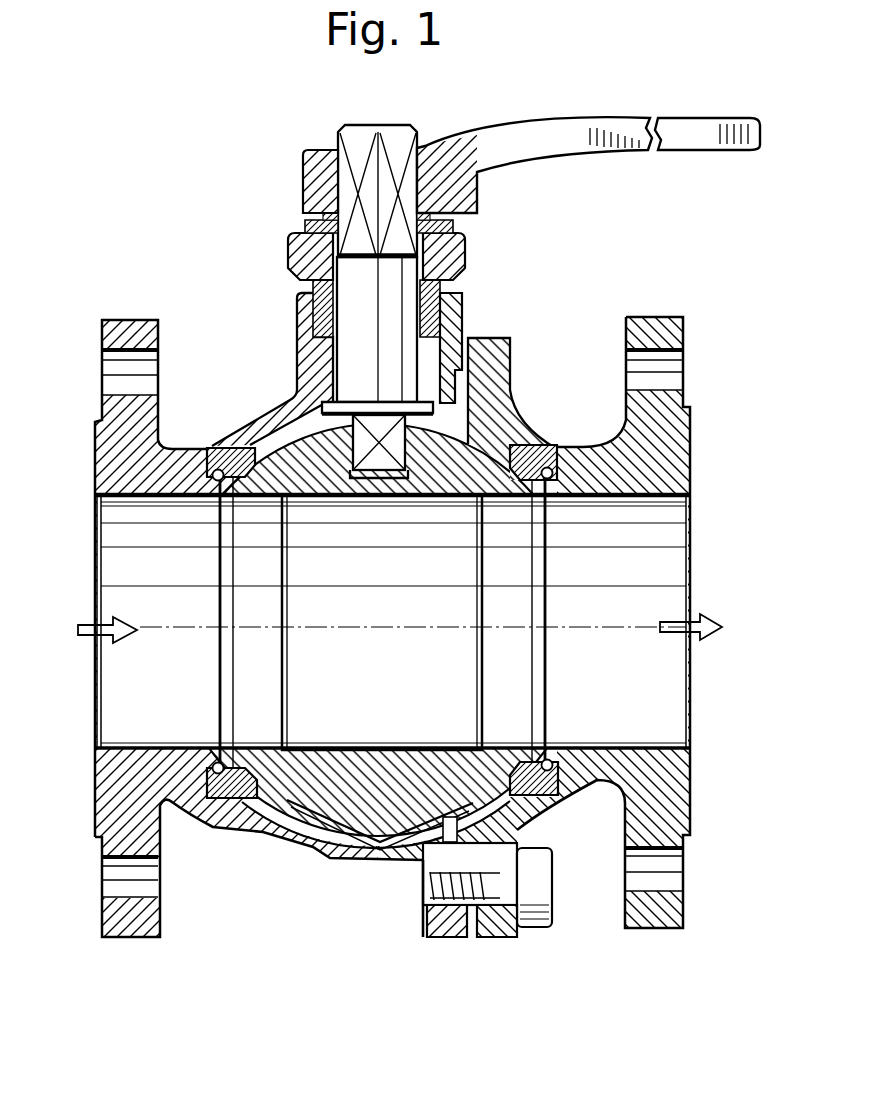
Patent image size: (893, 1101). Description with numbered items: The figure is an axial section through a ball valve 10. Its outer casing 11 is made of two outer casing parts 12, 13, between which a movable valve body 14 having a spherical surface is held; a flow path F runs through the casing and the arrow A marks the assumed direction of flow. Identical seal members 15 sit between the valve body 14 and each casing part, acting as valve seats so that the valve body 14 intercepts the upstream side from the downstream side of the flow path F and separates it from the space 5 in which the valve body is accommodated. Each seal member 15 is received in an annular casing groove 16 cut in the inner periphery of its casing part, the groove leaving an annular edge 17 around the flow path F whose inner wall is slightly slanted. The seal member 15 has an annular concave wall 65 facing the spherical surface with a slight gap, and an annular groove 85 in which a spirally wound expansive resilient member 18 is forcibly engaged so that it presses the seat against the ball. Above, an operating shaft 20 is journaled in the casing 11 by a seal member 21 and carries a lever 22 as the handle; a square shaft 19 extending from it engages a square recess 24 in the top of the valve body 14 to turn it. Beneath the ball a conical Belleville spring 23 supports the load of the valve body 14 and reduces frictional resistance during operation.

The space 5 is at (478, 428).
The ball valve 10 is at (397, 527).
The outer casing 11 is at (300, 368).
The outer casing part 12 is at (108, 427).
The outer casing part 13 is at (673, 428).
The movable valve body 14 is at (349, 768).
The seal member 15 is at (208, 806).
The annular casing groove 16 is at (537, 447).
The annular edge 17 is at (548, 492).
The annular expansive resilient member 18 is at (554, 463).
The square shaft 19 is at (356, 472).
The operating shaft 20 is at (445, 306).
The seal member 21 is at (318, 318).
The lever 22 is at (590, 152).
The conical Belleville spring 23 is at (352, 845).
The square opening or recess 24 is at (384, 478).
The annular concave wall 65 is at (262, 768).
The annular groove or recess 85 is at (217, 470).
The flow path F is at (382, 622).
The arrow A is at (386, 624).